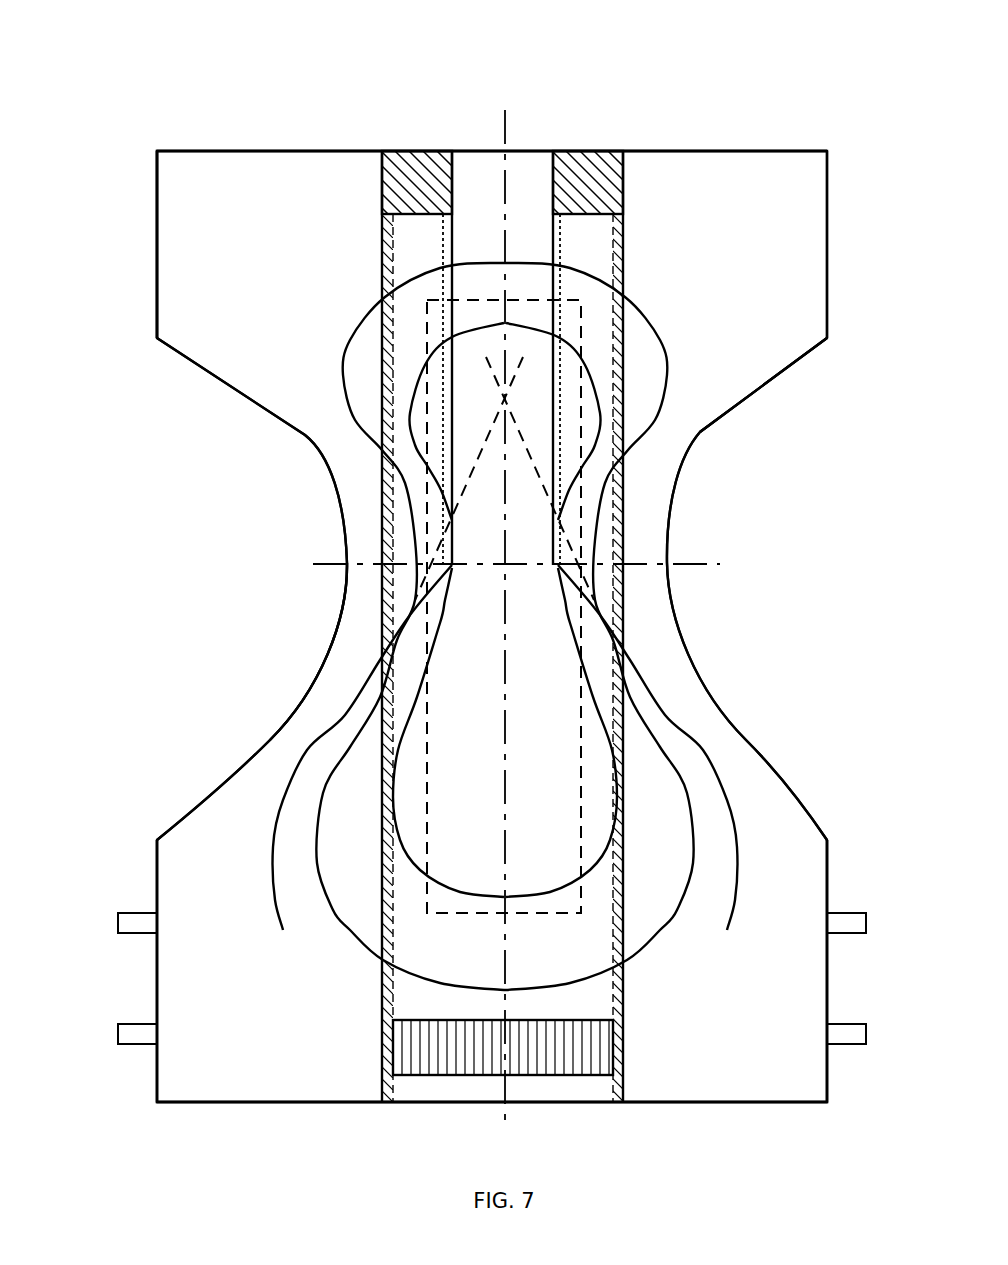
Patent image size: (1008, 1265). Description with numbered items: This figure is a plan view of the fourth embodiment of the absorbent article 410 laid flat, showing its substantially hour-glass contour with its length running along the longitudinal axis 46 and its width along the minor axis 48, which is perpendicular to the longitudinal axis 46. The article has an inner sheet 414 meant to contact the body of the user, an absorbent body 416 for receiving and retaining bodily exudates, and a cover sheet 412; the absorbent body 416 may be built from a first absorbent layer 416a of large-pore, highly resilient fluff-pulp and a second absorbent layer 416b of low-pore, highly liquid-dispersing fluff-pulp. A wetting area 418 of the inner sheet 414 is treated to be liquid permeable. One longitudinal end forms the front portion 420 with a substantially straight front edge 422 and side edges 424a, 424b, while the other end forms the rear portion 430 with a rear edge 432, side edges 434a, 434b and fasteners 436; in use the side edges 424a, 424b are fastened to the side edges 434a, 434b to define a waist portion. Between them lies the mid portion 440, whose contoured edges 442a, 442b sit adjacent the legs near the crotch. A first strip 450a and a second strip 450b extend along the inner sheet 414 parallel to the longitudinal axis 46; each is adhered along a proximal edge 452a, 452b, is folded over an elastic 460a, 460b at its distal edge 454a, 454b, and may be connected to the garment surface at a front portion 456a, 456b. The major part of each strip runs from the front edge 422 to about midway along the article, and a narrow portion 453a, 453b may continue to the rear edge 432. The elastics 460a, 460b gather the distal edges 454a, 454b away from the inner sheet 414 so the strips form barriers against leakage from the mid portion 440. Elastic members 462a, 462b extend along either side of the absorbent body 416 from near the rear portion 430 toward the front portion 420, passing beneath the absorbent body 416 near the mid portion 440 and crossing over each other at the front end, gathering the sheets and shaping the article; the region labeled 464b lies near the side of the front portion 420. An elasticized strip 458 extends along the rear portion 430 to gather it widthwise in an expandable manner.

The absorbent article 410 is at (180, 100).
The cover sheet 412 is at (273, 183).
The inner sheet 414 is at (183, 208).
The absorbent body 416 is at (645, 366).
The first absorbent layer 416a is at (393, 797).
The second absorbent layer 416b is at (627, 303).
The wetting area 418 is at (432, 298).
The front portion 420 is at (143, 247).
The front edge 422 is at (720, 151).
The side edge 424a is at (157, 175).
The side edge 424b is at (827, 270).
The rear portion 430 is at (138, 975).
The rear edge 432 is at (715, 1104).
The side edge 434a is at (152, 858).
The side edge 434b is at (827, 858).
The fasteners 436 is at (117, 924).
The mid portion 440 is at (298, 554).
The contoured edge 442a is at (268, 404).
The contoured edge 442b is at (750, 395).
The first strip 450a is at (420, 160).
The second strip 450b is at (585, 160).
The proximal edge 452a is at (385, 245).
The proximal edge 452b is at (625, 240).
The narrow portion 453a is at (392, 984).
The narrow portion 453b is at (625, 980).
The distal edge 454a is at (455, 245).
The distal edge 454b is at (552, 262).
The front portion 456a is at (392, 188).
The front portion 456b is at (615, 180).
The elasticized strip 458 is at (395, 1045).
The elastic 460a is at (443, 301).
The elastic 460b is at (558, 265).
The elastic member 462a is at (275, 878).
The elastic member 462b is at (735, 862).
The ear panel 464b is at (715, 340).
The longitudinal axis 46 is at (485, 601).
The minor axis 48 is at (705, 567).